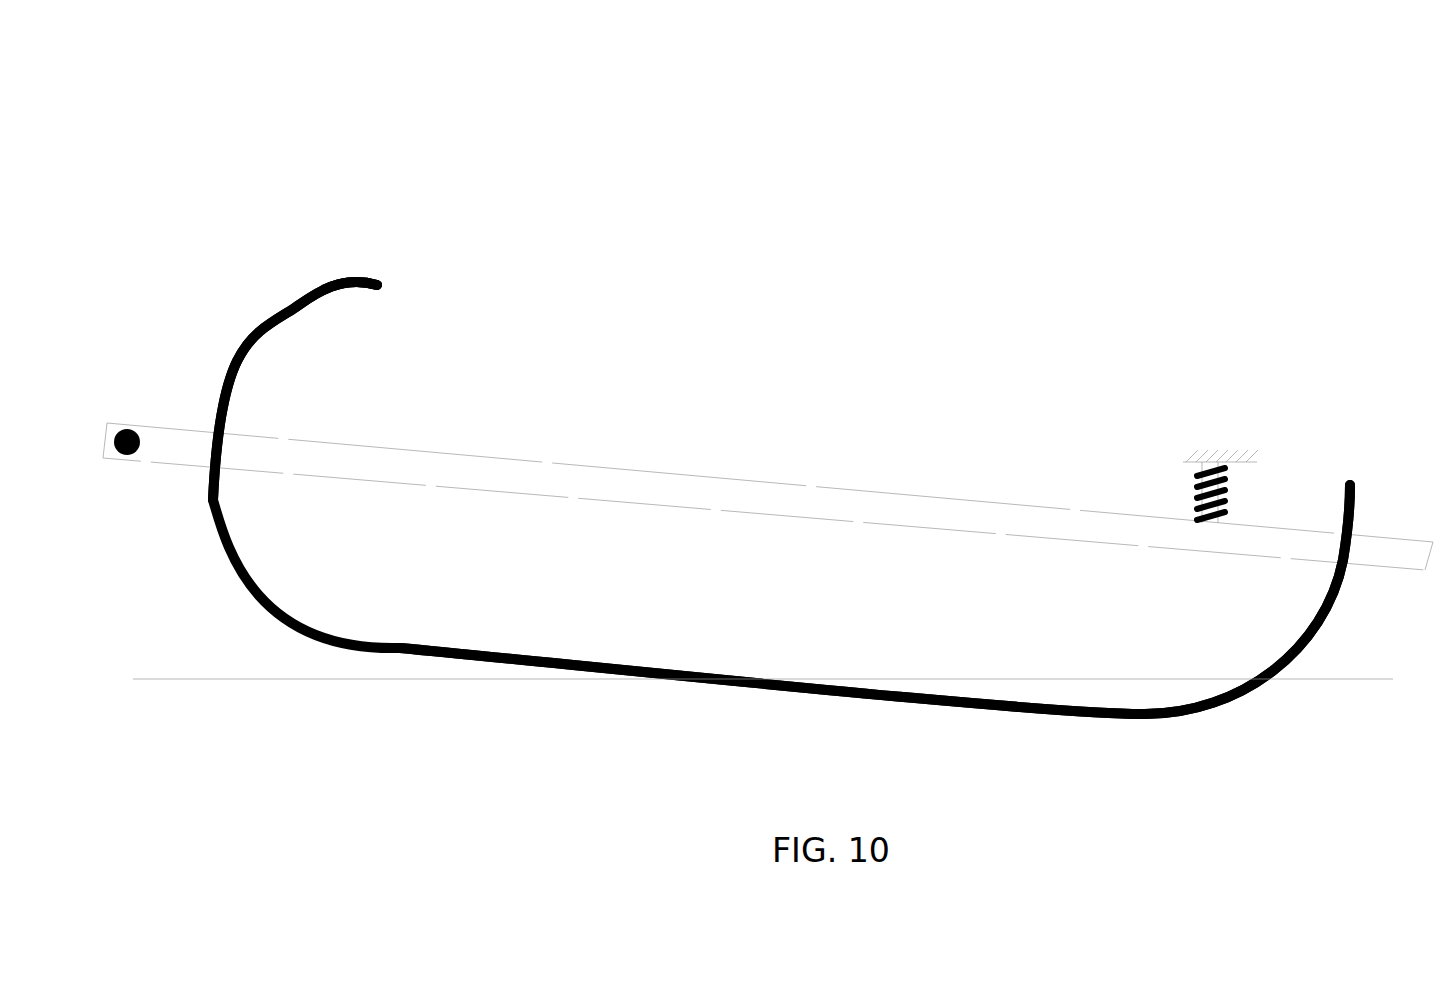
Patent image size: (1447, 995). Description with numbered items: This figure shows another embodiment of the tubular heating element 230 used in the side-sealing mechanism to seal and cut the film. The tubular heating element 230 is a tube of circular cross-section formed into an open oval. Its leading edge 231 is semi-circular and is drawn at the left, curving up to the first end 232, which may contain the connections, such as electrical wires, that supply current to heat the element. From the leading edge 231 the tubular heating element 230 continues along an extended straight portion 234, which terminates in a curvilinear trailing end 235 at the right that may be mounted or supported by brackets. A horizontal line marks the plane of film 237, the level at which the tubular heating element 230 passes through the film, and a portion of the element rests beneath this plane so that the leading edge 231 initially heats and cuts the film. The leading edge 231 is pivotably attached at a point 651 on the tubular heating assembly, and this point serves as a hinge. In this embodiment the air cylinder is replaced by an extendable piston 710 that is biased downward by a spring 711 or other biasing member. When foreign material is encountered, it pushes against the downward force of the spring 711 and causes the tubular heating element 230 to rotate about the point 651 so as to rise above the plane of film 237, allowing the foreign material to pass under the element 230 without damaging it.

The tubular heating element 230 is at (292, 178).
The leading edge 231 is at (225, 392).
The first end 232 is at (387, 305).
The extended straight portion 234 is at (828, 692).
The curvilinear trailing end 235 is at (1295, 662).
The plane of film 237 is at (763, 693).
The point 651 is at (123, 453).
The extendable piston 710 is at (1193, 505).
The spring 711 is at (1223, 493).